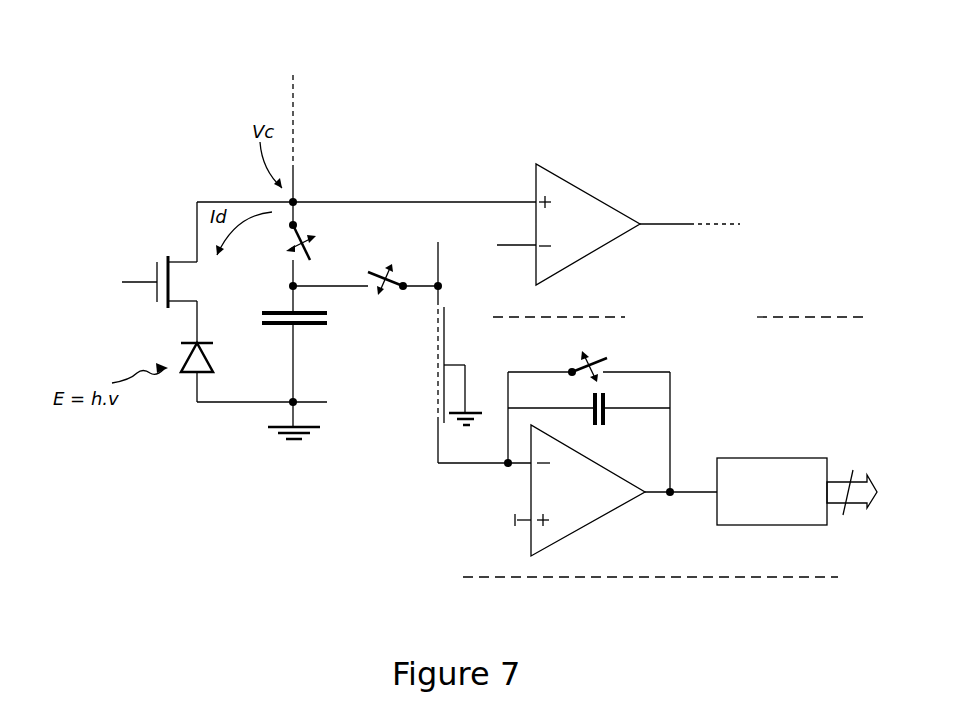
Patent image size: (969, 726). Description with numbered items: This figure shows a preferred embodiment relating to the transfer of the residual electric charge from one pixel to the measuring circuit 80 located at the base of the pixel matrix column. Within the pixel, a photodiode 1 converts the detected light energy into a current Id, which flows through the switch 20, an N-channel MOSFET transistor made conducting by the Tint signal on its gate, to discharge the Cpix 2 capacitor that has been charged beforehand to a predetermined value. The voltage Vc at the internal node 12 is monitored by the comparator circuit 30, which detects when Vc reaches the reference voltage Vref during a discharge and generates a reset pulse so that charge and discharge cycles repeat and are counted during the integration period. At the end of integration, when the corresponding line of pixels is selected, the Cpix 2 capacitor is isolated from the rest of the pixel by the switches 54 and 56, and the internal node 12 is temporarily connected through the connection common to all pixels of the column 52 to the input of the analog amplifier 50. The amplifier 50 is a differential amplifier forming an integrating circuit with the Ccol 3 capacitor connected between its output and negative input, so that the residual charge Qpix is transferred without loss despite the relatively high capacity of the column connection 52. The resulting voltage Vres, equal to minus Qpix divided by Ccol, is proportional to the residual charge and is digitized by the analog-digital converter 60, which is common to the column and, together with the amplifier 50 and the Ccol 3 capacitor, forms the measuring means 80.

The photodiode 1 is at (211, 356).
The Cpix capacitor 2 is at (301, 326).
The Ccol capacitor 3 is at (607, 427).
The internal node 12 is at (298, 195).
The switch 20 is at (150, 303).
The comparator circuit 30 is at (580, 186).
The analog amplifier 50 is at (575, 533).
The column connection 52 is at (437, 347).
The switch 54 is at (395, 270).
The switch 56 is at (318, 246).
The analog-digital converter 60 is at (785, 525).
The measuring means 80 is at (813, 317).